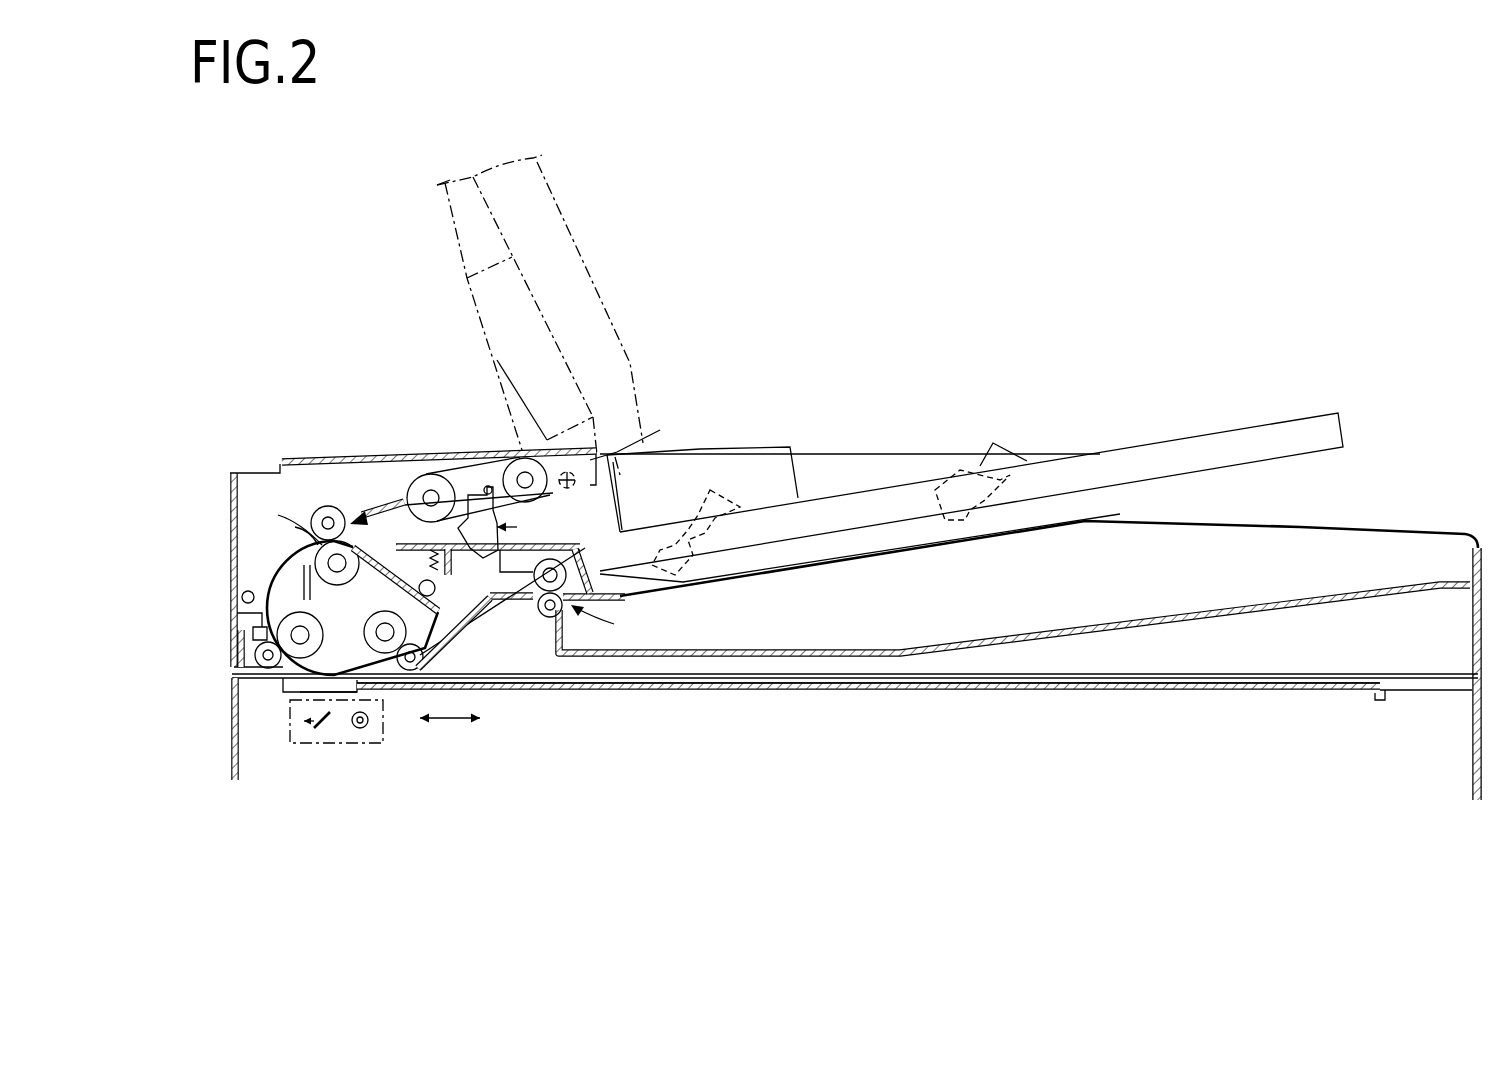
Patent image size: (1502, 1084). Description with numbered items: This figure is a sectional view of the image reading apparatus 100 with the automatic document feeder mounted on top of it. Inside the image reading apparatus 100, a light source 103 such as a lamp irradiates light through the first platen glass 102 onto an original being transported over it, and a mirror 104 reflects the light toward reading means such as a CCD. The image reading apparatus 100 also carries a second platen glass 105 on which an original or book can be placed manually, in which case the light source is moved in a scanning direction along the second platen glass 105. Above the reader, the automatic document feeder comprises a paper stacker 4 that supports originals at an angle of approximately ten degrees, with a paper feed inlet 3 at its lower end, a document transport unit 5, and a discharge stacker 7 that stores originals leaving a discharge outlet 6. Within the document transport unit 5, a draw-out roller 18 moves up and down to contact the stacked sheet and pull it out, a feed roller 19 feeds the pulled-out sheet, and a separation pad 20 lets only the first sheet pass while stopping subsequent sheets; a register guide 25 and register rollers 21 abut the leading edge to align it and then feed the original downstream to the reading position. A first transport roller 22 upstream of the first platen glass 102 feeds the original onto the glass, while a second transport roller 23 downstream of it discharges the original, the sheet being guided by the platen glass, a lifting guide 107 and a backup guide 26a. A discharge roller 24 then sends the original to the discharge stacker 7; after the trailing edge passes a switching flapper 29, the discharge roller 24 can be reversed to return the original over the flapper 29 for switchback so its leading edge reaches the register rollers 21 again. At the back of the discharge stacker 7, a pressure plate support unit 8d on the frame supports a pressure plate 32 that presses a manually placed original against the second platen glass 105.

The paper feed inlet 3 is at (516, 527).
The paper stacker 4 is at (1224, 428).
The document transport unit 5 is at (300, 492).
The discharge outlet 6 is at (603, 624).
The discharge stacker 7 is at (1115, 624).
The pressure plate support unit 8d is at (1199, 678).
The draw-out roller 18 is at (507, 452).
The feed roller 19 is at (428, 475).
The separation pad 20 is at (392, 503).
The register rollers 21 is at (320, 521).
The first transport roller 22 is at (275, 605).
The second transport roller 23 is at (384, 611).
The discharge roller 24 is at (532, 590).
The register guide 25 is at (377, 507).
The backup guide 26a is at (342, 665).
The switching flapper 29 is at (466, 598).
The pressure plate 32 is at (950, 690).
The image reading apparatus 100 is at (232, 737).
The first platen glass 102 is at (303, 690).
The light source 103 is at (362, 728).
The mirror 104 is at (323, 730).
The second platen glass 105 is at (781, 690).
The lifting guide 107 is at (340, 688).